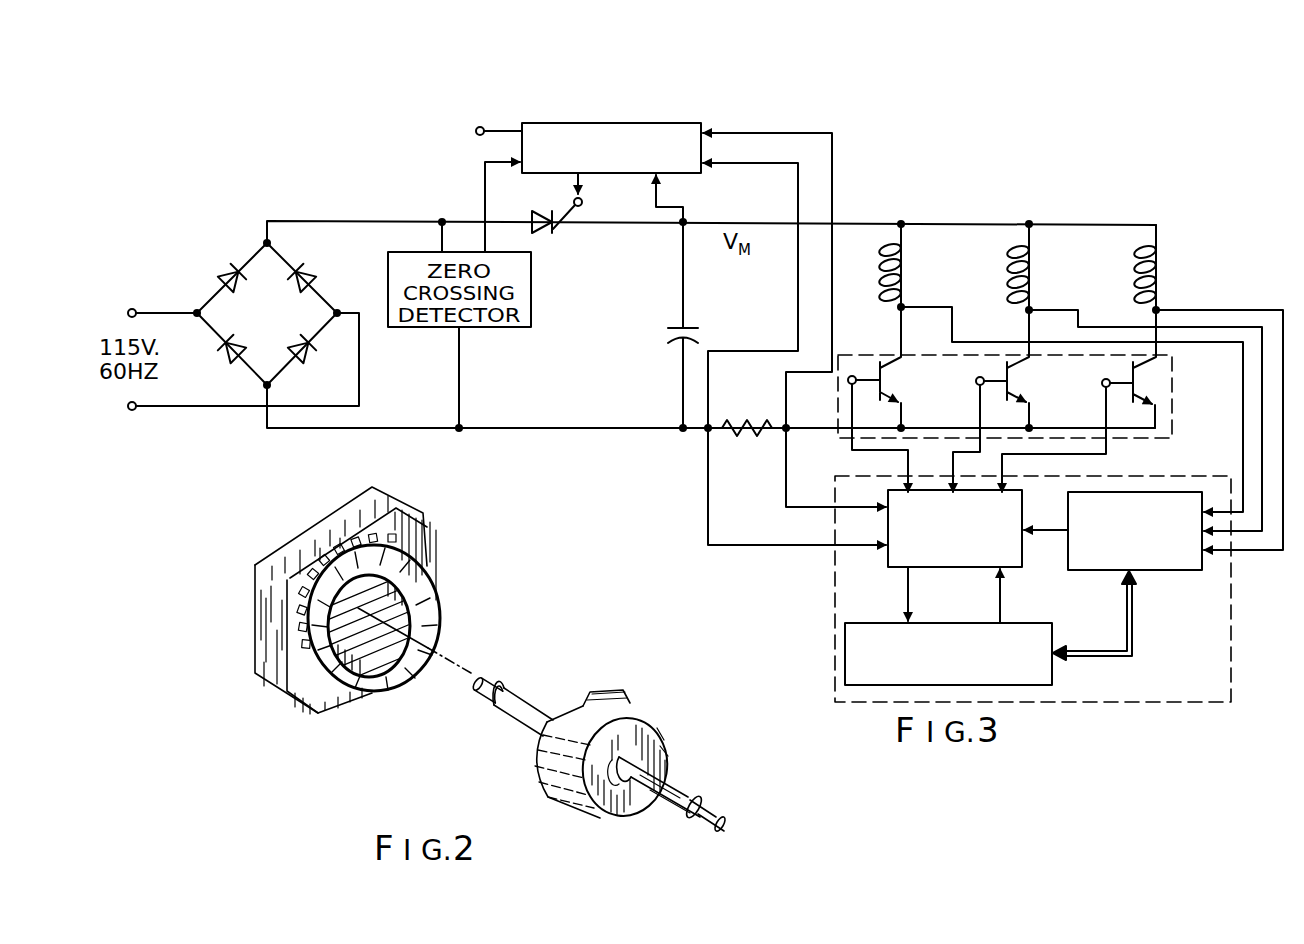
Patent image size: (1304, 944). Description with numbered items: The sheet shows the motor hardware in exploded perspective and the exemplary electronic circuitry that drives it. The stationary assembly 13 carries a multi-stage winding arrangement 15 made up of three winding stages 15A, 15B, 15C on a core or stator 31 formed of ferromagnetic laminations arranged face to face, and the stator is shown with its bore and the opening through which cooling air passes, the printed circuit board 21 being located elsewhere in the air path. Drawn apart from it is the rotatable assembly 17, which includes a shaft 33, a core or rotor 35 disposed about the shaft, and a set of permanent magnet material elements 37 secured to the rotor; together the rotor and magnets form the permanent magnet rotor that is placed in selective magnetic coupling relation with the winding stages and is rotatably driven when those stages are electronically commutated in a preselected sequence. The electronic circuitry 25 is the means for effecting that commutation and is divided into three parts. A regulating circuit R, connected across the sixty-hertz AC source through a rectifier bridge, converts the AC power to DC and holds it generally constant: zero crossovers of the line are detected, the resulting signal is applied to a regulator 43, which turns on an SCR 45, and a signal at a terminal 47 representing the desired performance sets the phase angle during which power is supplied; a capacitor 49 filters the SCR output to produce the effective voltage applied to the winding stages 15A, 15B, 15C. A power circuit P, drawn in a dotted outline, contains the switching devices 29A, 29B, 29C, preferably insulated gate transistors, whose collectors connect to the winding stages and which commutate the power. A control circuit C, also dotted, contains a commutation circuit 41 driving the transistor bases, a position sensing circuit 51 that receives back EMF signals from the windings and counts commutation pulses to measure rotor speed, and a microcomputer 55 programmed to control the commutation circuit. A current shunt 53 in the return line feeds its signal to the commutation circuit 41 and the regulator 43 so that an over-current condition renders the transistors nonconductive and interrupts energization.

In FIG. 2, the stationary assembly 13 is at (331, 609).
In FIG. 3, the multi-stage winding arrangement 15 is at (1060, 241).
In FIG. 2, the multi-stage winding arrangement 15 is at (238, 614).
In FIG. 3, the winding stage 15A is at (914, 266).
In FIG. 3, the winding stage 15B is at (1042, 266).
In FIG. 3, the winding stage 15C is at (1170, 266).
In FIG. 2, the rotatable assembly 17 is at (607, 749).
In FIG. 2, the printed circuit board 21 is at (441, 604).
In FIG. 3, the electronic circuitry 25 is at (335, 180).
In FIG. 3, the switching device 29A is at (894, 382).
In FIG. 3, the switching device 29B is at (1018, 382).
In FIG. 3, the switching device 29C is at (1148, 382).
In FIG. 2, the stator 31 is at (262, 656).
In FIG. 2, the shaft 33 is at (702, 796).
In FIG. 2, the rotor 35 is at (664, 758).
In FIG. 2, the permanent magnet material elements 37 is at (664, 733).
In FIG. 3, the commutation circuit 41 is at (966, 568).
In FIG. 3, the regulator 43 is at (700, 124).
In FIG. 3, the SCR 45 is at (556, 234).
In FIG. 3, the terminal 47 is at (479, 127).
In FIG. 3, the capacitor 49 is at (670, 326).
In FIG. 3, the position sensing circuit 51 is at (1179, 571).
In FIG. 3, the current shunt 53 is at (752, 418).
In FIG. 3, the microcomputer 55 is at (1053, 680).
In FIG. 3, the regulating circuit R is at (848, 163).
In FIG. 3, the power circuit P is at (1031, 399).
In FIG. 3, the control circuit C is at (1051, 604).